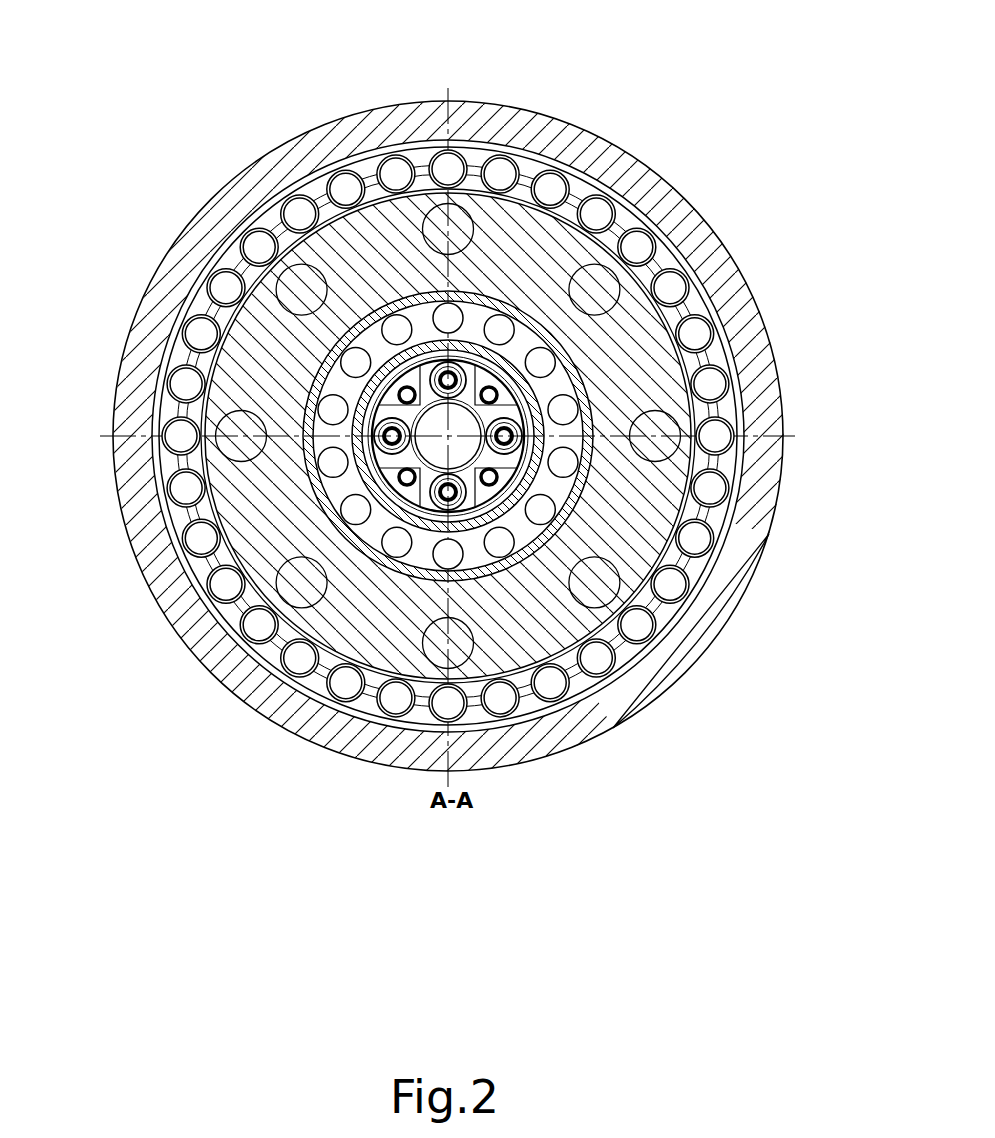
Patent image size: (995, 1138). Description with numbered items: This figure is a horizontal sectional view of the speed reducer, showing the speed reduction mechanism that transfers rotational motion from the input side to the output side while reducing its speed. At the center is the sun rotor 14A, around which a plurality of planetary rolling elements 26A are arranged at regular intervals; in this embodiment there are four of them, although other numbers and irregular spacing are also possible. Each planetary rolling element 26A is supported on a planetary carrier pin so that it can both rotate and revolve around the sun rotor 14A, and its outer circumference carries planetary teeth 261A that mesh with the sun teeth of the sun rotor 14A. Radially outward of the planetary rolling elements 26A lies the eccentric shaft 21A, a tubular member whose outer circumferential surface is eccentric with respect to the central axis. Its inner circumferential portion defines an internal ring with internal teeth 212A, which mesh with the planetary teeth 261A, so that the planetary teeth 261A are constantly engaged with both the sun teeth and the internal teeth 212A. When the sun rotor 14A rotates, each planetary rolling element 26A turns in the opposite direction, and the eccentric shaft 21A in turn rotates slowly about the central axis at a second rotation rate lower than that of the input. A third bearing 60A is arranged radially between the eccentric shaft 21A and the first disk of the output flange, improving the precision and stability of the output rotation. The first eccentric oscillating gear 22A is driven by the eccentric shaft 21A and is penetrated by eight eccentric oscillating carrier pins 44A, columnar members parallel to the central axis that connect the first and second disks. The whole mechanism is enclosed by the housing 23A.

The sun rotor 14A is at (302, 690).
The eccentric shaft 21A is at (600, 300).
The internal teeth 212A is at (517, 323).
The first eccentric oscillating gear 22A is at (528, 607).
The housing 23A is at (545, 140).
The planetary rolling element 26A is at (567, 513).
The planetary teeth 261A is at (558, 480).
The eccentric oscillating carrier pin 44A is at (297, 287).
The third bearing 60A is at (333, 467).